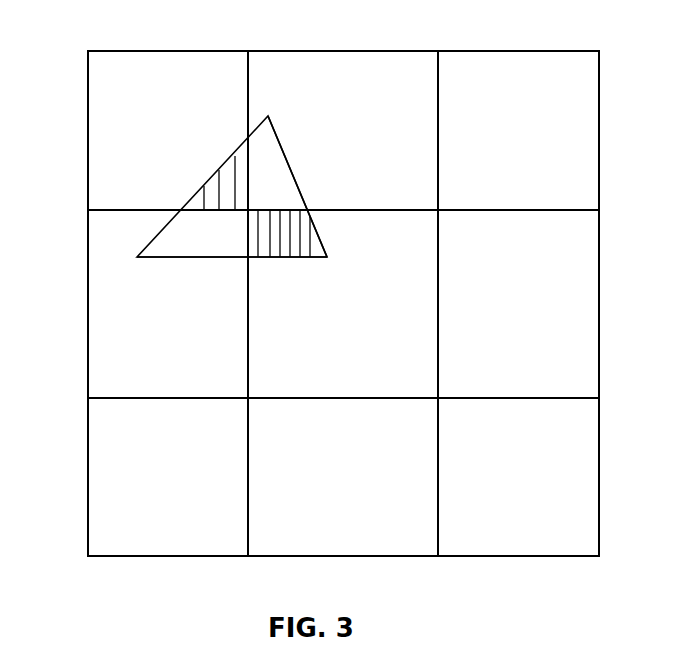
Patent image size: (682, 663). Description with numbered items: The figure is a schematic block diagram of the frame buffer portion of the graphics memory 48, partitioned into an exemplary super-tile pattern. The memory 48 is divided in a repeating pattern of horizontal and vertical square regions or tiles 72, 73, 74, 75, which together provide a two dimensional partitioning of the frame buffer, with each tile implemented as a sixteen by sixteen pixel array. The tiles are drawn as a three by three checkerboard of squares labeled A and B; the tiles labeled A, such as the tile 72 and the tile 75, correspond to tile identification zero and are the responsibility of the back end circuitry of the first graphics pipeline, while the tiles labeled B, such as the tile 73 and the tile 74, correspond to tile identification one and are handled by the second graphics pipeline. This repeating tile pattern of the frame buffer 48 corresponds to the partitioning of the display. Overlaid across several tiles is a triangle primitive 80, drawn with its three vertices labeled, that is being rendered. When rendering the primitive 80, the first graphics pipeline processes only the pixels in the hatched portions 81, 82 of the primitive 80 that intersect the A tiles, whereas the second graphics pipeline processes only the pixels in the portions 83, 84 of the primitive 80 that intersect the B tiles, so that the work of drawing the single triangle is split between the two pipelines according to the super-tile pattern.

The graphics memory 48 is at (599, 113).
The tile 72 is at (167, 51).
The tile 73 is at (342, 51).
The tile 74 is at (88, 304).
The tile 75 is at (438, 248).
The primitive 80 is at (299, 192).
The portion of the primitive 81 is at (213, 183).
The portion of the primitive 82 is at (292, 257).
The portion of the primitive 83 is at (198, 257).
The portion of the primitive 84 is at (291, 172).